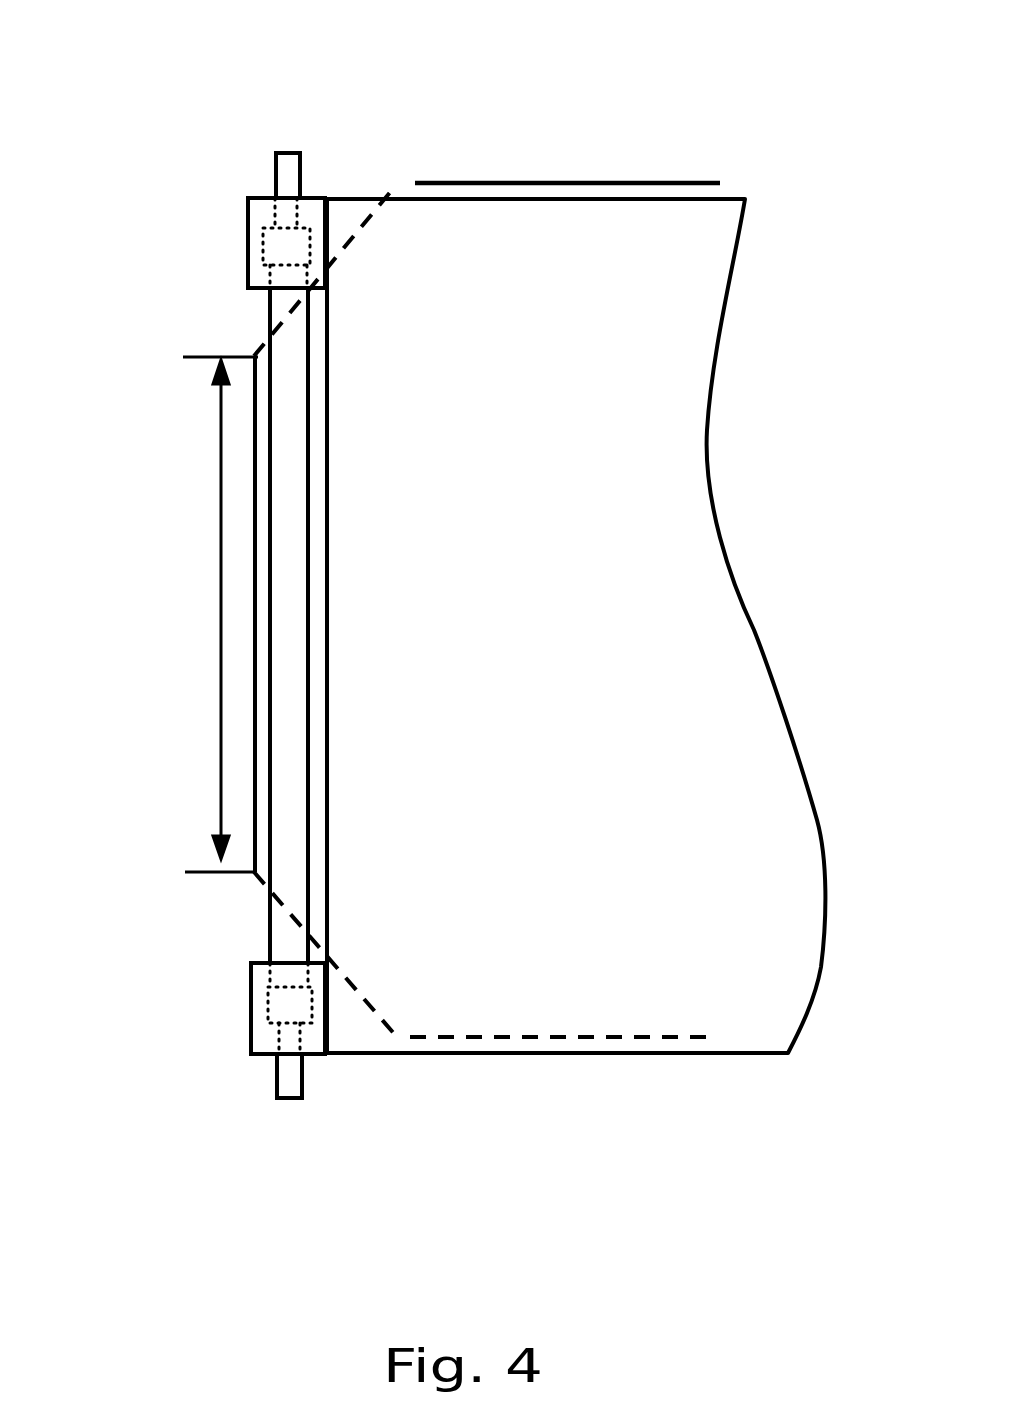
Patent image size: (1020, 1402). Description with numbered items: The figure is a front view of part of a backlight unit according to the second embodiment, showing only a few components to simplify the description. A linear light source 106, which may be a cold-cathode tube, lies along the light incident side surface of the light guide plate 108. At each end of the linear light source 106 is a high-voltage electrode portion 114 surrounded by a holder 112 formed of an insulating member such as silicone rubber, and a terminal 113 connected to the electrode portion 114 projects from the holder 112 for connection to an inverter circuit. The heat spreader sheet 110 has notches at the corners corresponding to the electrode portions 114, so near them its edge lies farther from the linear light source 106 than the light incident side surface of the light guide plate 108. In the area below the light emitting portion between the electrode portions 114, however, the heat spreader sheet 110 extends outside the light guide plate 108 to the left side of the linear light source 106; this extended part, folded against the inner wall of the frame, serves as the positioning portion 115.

The linear light source 106 is at (270, 945).
The light guide plate 108 is at (349, 218).
The heat spreader sheet 110 is at (577, 183).
The holder 112 is at (268, 295).
The terminal 113 is at (277, 153).
The electrode portion 114 is at (270, 249).
The positioning portion 115 is at (253, 710).